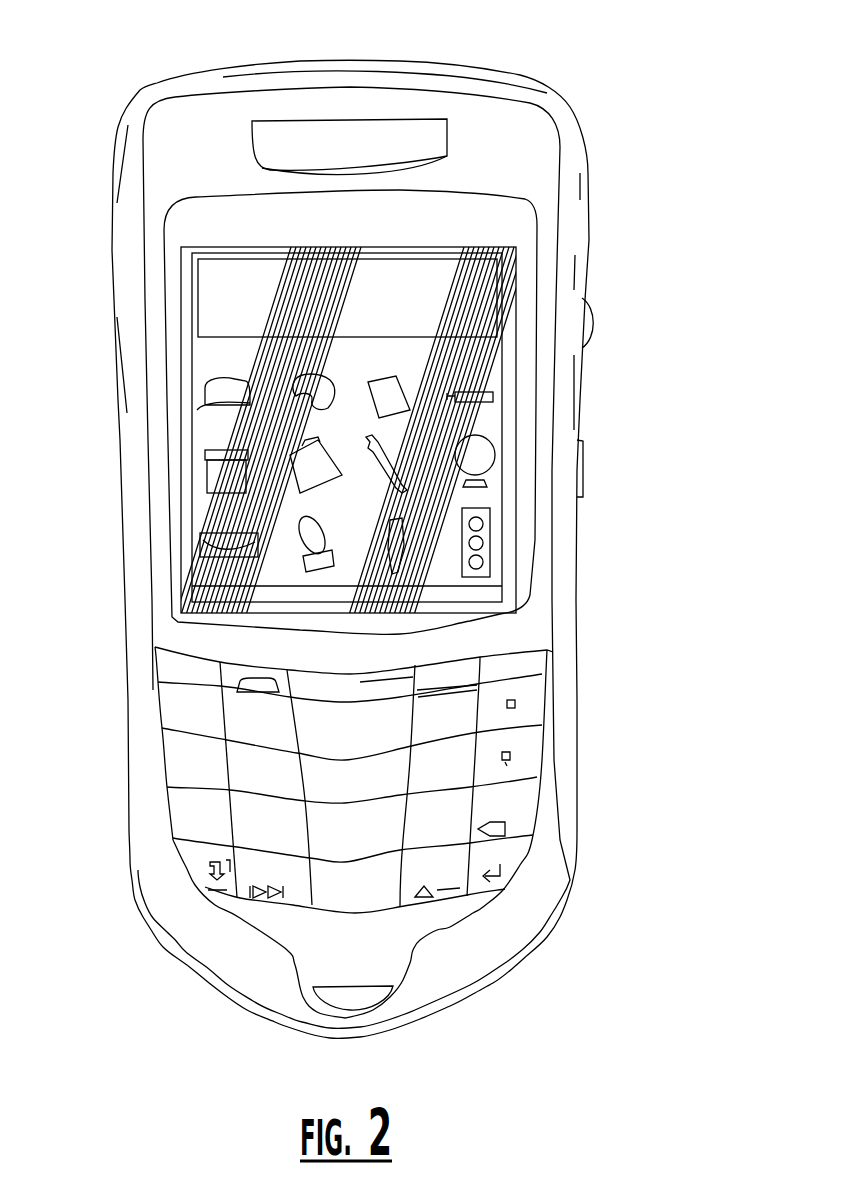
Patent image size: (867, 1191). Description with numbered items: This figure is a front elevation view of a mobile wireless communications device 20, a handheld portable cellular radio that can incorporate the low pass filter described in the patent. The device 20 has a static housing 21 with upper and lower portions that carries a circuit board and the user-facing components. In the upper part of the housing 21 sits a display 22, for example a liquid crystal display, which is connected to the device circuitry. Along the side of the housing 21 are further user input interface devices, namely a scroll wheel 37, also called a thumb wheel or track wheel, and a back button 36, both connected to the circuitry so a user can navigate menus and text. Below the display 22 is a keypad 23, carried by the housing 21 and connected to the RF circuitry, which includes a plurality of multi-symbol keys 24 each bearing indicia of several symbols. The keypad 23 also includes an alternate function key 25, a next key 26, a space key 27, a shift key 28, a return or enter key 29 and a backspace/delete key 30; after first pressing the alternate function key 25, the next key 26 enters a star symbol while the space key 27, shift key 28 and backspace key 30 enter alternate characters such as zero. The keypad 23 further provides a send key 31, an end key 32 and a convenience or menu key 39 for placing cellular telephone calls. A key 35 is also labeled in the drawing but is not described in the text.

The mobile wireless communications device 20 is at (655, 57).
The housing 21 is at (163, 97).
The display 22 is at (193, 348).
The keypad 23 is at (360, 786).
The multi-symbol keys 24 is at (176, 758).
The alternate function key 25 is at (198, 872).
The next key 26 is at (240, 897).
The space key 27 is at (312, 900).
The shift key 28 is at (450, 898).
The return key 29 is at (507, 862).
The backspace/delete key 30 is at (615, 793).
The send key 31 is at (238, 672).
The end key 32 is at (450, 673).
The key 35 is at (624, 731).
The back button 36 is at (658, 447).
The scroll wheel 37 is at (684, 302).
The convenience key 39 is at (373, 682).